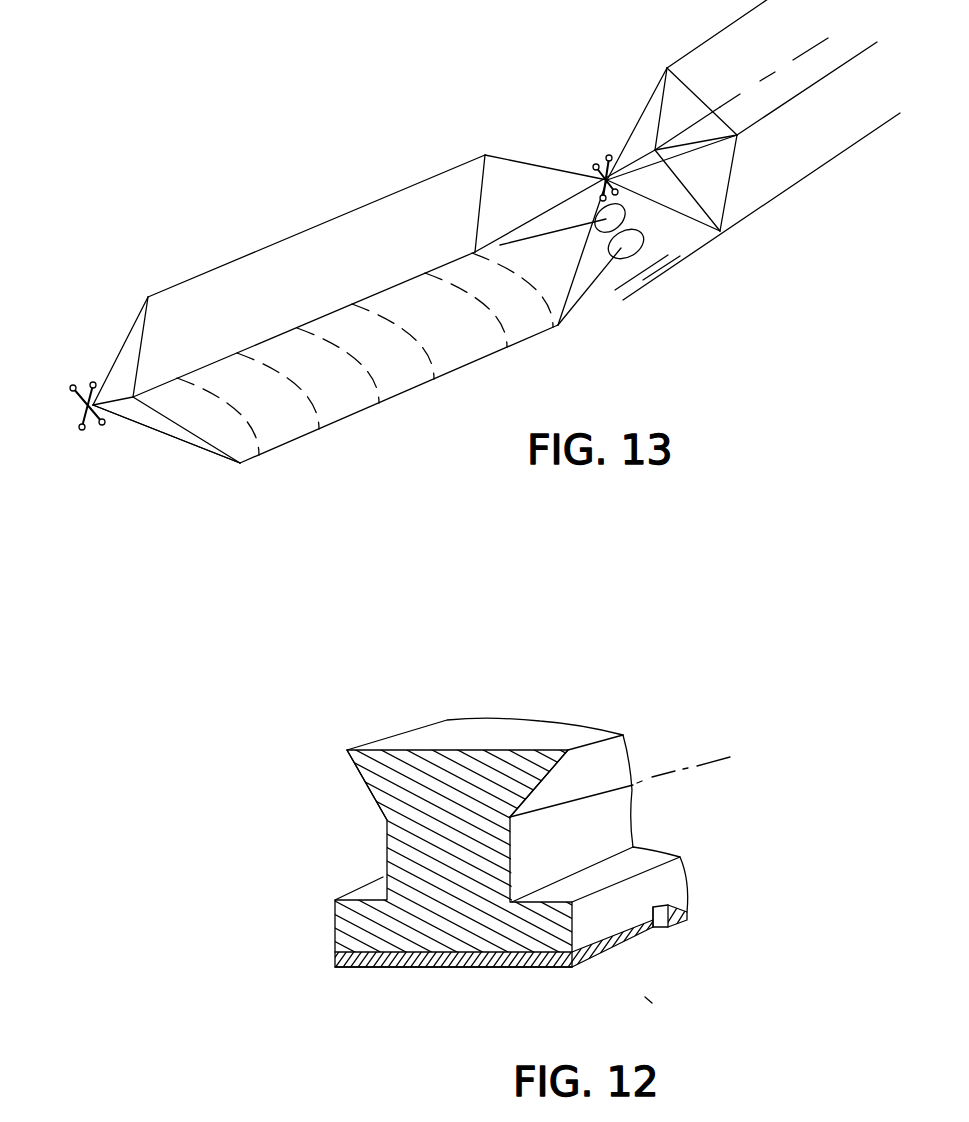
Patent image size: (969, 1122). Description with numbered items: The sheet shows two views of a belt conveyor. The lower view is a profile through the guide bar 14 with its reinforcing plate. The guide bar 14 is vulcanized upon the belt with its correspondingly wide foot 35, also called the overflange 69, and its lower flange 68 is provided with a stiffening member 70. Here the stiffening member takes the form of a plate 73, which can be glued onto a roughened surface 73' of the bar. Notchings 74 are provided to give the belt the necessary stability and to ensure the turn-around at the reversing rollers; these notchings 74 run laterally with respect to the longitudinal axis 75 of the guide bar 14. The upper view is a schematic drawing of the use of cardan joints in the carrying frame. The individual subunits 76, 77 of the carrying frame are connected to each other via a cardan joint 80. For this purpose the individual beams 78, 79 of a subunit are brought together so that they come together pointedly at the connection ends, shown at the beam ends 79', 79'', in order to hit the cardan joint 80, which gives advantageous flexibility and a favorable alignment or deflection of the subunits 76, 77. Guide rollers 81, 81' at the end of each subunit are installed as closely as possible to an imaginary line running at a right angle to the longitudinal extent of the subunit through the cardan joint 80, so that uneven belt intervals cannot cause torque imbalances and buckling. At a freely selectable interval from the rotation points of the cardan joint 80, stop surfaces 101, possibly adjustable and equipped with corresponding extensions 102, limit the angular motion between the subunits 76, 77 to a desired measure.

In FIG. 12, the guide bar 14 is at (420, 845).
In FIG. 12, the foot 35 is at (387, 768).
In FIG. 12, the overflange 69 is at (387, 768).
In FIG. 12, the lower flange 68 is at (365, 922).
In FIG. 12, the stiffening member 70 is at (537, 982).
In FIG. 12, the plate 73 is at (548, 958).
In FIG. 12, the roughened surface 73' is at (453, 988).
In FIG. 12, the notchings 74 is at (660, 930).
In FIG. 12, the longitudinal axis 75 is at (637, 783).
In FIG. 13, the subunit 76 is at (452, 338).
In FIG. 13, the subunit 77 is at (850, 117).
In FIG. 13, the beam 78 is at (373, 200).
In FIG. 13, the beam 79 is at (365, 354).
In FIG. 13, the groove end 79' is at (166, 436).
In FIG. 13, the groove end 79'' is at (565, 201).
In FIG. 13, the cardan joint 80 is at (88, 383).
In FIG. 13, the guide rollers 81 is at (587, 274).
In FIG. 13, the opening 81' is at (565, 183).
In FIG. 13, the stop surfaces 101 is at (693, 250).
In FIG. 13, the extensions 102 is at (652, 282).